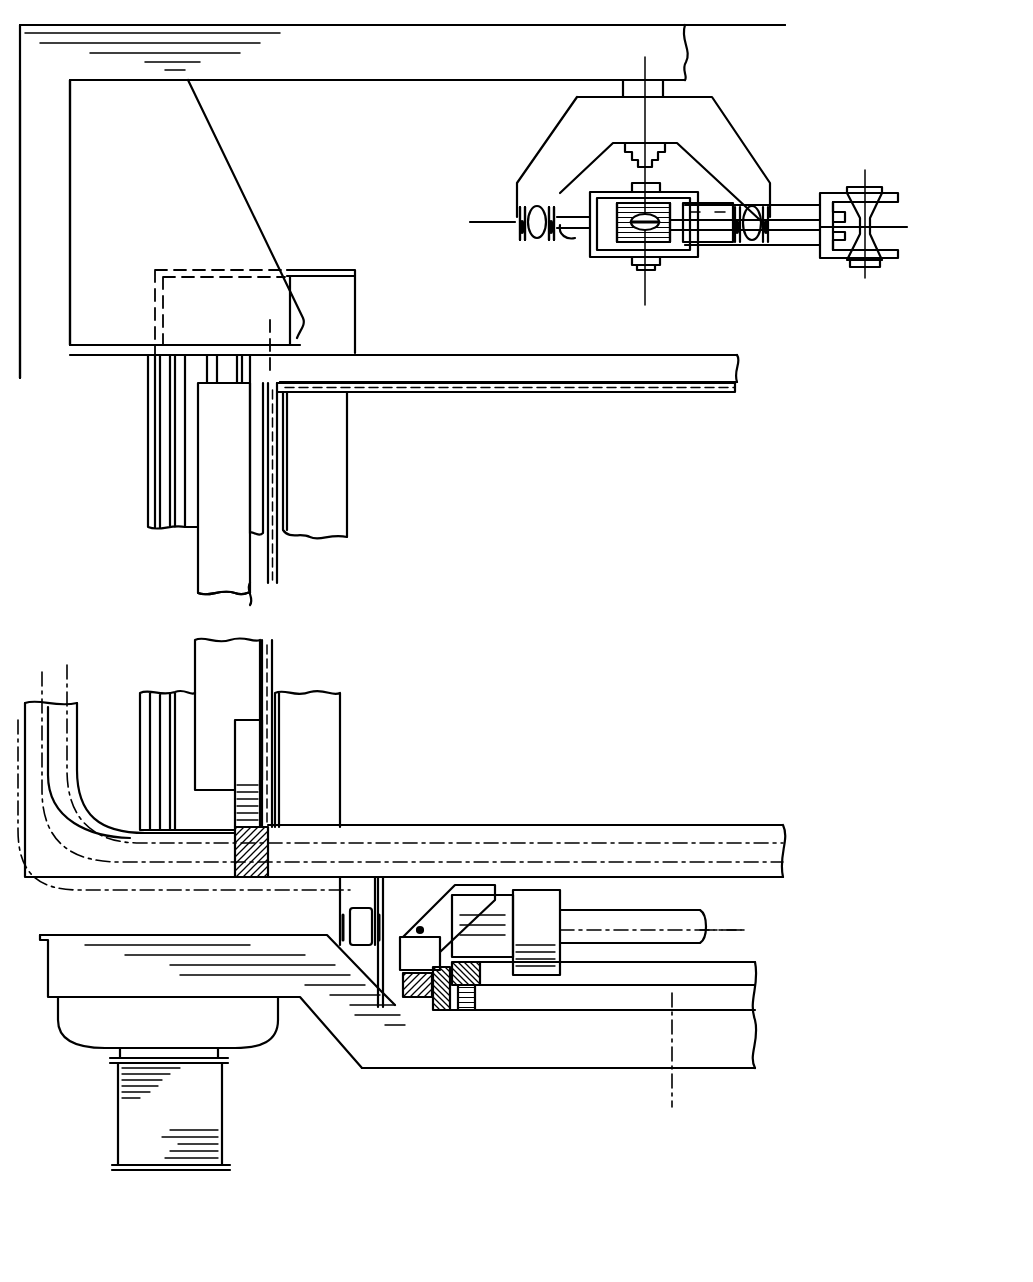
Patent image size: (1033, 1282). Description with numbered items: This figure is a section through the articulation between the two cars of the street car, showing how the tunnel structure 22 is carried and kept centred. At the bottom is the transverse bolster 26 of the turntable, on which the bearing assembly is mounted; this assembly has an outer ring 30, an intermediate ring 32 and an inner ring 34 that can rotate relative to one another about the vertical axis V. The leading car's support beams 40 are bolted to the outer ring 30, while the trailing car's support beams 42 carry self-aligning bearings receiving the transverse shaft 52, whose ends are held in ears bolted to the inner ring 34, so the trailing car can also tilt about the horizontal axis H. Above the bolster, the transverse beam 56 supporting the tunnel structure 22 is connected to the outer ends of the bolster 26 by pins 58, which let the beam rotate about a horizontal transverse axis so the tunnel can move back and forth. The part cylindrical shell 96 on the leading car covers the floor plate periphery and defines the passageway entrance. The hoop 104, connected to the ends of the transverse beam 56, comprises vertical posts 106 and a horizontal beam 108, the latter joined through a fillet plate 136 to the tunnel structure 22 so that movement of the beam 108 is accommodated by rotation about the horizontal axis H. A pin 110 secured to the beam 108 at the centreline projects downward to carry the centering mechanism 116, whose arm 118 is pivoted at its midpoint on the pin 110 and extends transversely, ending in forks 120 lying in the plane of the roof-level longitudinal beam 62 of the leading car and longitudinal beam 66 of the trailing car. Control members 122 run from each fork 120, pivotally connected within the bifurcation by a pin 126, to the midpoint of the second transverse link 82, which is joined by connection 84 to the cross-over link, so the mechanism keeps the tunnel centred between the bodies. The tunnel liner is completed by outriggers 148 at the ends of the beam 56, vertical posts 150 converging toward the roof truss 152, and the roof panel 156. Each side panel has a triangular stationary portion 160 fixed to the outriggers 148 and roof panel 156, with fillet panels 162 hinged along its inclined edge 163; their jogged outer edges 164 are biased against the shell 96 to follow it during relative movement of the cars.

The tunnel structure 22 is at (378, 398).
The transverse bolster 26 is at (540, 1032).
The outer ring 30 is at (412, 1005).
The intermediate ring 32 is at (433, 1010).
The inner ring 34 is at (475, 1012).
The support beams 40 is at (412, 933).
The support beams 42 is at (545, 917).
The transverse shaft 52 is at (672, 920).
The transverse beam 56 is at (648, 835).
The pins 58 is at (352, 925).
The longitudinal beam 62 is at (577, 190).
The longitudinal beam 66 is at (835, 196).
The second transverse link 82 is at (790, 215).
The connection 84 is at (605, 251).
The part cylindrical shell 96 is at (158, 445).
The hoop 104 is at (245, 88).
The vertical posts 106 is at (68, 230).
The horizontal beam 108 is at (402, 201).
The pin 110 is at (632, 160).
The centering mechanism 116 is at (492, 176).
The arm 118 is at (522, 186).
The forks 120 is at (518, 222).
The control members 122 is at (533, 240).
The pin 126 is at (566, 240).
The fillet plate 136 is at (230, 206).
The outriggers 148 is at (268, 833).
The vertical posts 150 is at (315, 548).
The roof truss 152 is at (522, 370).
The roof panel 156 is at (500, 393).
The stationary portion 160 is at (276, 563).
The fillet panels 162 is at (207, 665).
The inclined edge 163 is at (258, 596).
The outer edges 164 is at (200, 570).
The horizontal axis H is at (730, 923).
The vertical axis V is at (660, 1058).